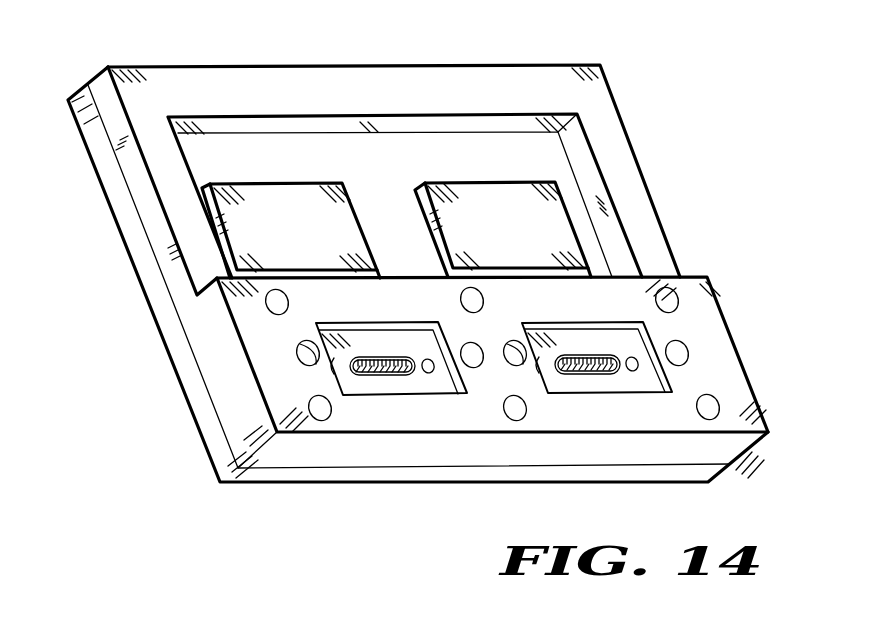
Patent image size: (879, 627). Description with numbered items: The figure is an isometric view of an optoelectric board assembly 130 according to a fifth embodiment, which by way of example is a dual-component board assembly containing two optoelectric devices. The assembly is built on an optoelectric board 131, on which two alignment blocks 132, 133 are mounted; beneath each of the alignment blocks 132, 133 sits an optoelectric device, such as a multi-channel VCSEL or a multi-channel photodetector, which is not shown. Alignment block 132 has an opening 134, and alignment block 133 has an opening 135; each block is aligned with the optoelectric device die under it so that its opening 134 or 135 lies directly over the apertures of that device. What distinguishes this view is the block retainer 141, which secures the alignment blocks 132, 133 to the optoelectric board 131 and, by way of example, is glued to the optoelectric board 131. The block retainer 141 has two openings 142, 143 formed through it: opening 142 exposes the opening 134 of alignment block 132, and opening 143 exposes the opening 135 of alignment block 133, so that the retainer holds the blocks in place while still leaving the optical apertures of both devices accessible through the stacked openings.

The optoelectric board assembly 130 is at (418, 312).
The optoelectric board 131 is at (358, 482).
The alignment block 132 is at (373, 333).
The alignment block 133 is at (578, 333).
The opening 134 is at (400, 377).
The opening 135 is at (605, 376).
The block retainer 141 is at (222, 399).
The opening 142 is at (422, 395).
The opening 143 is at (628, 395).